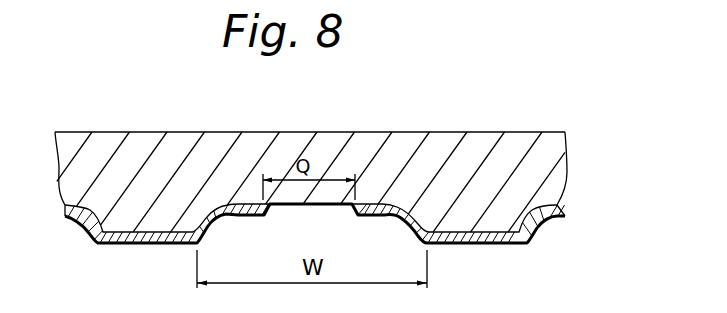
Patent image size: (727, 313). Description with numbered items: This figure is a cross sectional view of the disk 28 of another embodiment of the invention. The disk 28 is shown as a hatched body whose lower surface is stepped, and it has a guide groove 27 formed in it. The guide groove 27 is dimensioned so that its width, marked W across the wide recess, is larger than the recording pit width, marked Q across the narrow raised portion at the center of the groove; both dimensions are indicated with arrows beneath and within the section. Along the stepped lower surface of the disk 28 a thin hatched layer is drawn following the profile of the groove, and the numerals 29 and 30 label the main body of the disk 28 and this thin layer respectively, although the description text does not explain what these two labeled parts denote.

The guide groove 27 is at (404, 193).
The disk 28 is at (342, 132).
The substrate body 29 is at (551, 161).
The thin film layer 30 is at (566, 207).